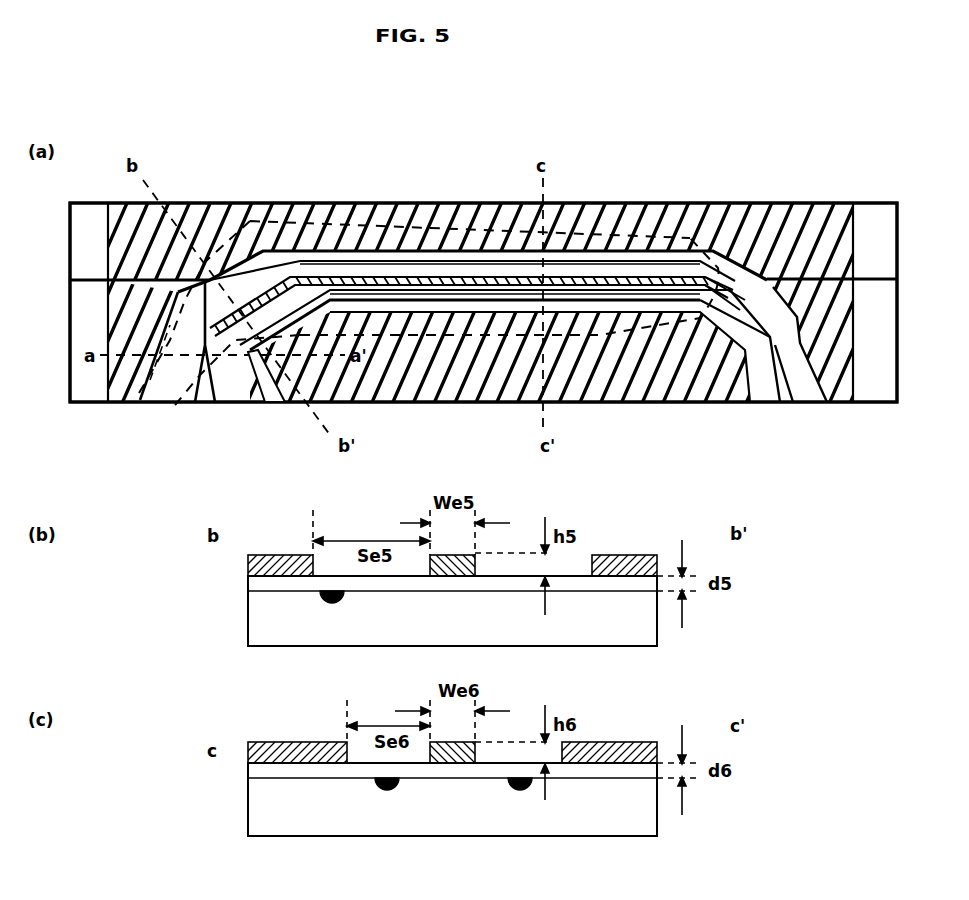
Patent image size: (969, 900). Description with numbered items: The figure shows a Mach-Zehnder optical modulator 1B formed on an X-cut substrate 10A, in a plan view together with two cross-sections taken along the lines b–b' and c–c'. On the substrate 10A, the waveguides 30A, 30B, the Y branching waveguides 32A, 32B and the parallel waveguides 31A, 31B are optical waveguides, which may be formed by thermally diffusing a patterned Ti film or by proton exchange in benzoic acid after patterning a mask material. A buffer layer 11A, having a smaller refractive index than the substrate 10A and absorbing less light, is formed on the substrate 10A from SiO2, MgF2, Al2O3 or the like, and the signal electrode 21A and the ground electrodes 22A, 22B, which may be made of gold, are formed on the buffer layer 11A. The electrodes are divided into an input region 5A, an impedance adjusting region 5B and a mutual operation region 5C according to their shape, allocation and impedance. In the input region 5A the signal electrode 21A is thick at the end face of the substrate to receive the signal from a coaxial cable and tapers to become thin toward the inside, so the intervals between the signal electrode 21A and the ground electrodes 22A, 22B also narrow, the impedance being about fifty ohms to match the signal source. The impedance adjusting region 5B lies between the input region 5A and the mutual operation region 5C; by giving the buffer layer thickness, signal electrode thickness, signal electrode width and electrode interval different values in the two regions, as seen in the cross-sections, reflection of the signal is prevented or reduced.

The optical modulator 1B is at (872, 403).
The input region 5A is at (168, 410).
The impedance adjusting region 5B is at (221, 252).
The mutual operation region 5C is at (652, 236).
The substrate 10A is at (248, 625).
The buffer layer 11A is at (248, 590).
The signal electrode 21A is at (203, 413).
The ground electrode 22A is at (123, 403).
The ground electrode 22B is at (280, 415).
The waveguide 30A is at (102, 277).
The waveguide 30B is at (867, 267).
The parallel waveguide 31A is at (337, 262).
The parallel waveguide 31B is at (387, 290).
The Y branching waveguide 32A is at (264, 272).
The Y branching waveguide 32B is at (723, 250).